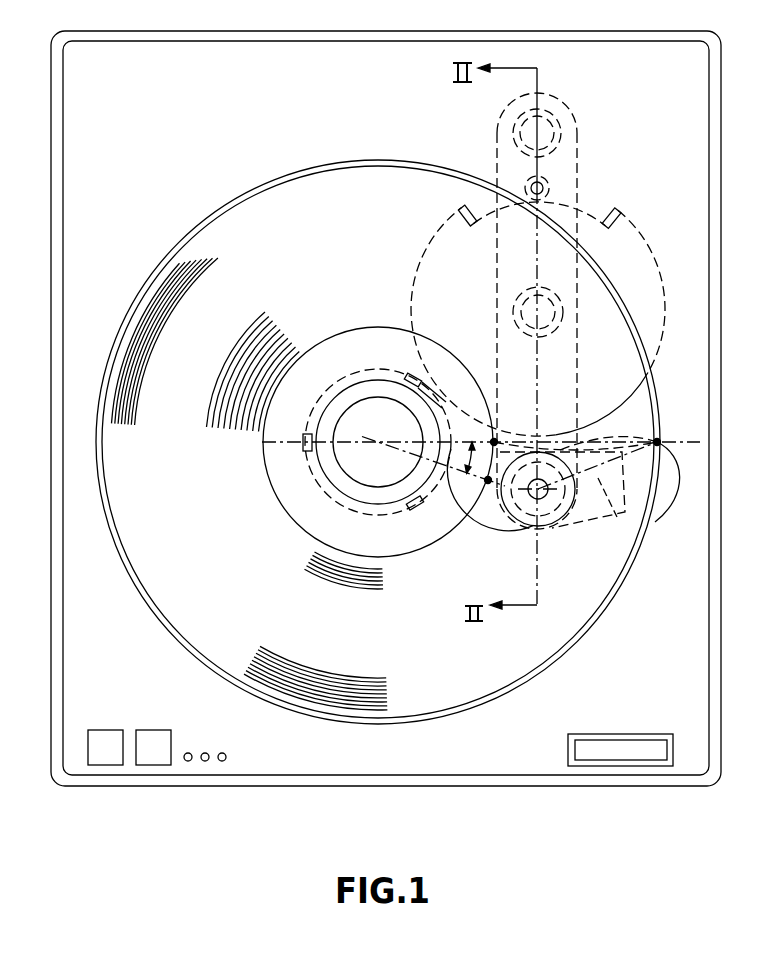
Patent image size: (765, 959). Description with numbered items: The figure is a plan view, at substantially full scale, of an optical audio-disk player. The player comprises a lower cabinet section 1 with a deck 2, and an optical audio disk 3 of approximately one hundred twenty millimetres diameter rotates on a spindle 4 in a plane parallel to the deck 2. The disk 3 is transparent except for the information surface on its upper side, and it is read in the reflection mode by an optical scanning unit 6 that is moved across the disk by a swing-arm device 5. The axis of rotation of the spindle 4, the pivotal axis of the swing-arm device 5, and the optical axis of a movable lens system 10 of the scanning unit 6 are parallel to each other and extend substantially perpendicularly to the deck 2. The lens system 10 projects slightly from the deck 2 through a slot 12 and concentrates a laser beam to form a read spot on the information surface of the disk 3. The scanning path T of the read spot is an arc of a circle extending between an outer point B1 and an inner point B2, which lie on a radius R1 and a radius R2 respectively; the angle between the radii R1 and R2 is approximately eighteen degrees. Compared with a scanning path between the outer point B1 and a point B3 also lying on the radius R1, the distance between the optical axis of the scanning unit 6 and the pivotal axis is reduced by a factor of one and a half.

The lower cabinet section 1 is at (233, 31).
The deck 2 is at (295, 60).
The optical audio disk 3 is at (463, 694).
The spindle 4 is at (353, 463).
The swing-arm device 5 is at (457, 243).
The optical scanning unit 6 is at (600, 533).
The movable lens system 10 is at (530, 515).
The slot 12 is at (664, 493).
The scanning path T is at (618, 530).
The outer point of the scanning path B1 is at (659, 440).
The inner point of the scanning path B2 is at (488, 481).
The comparison inner point B3 is at (498, 438).
The radius R1 is at (461, 440).
The radius R2 is at (430, 457).